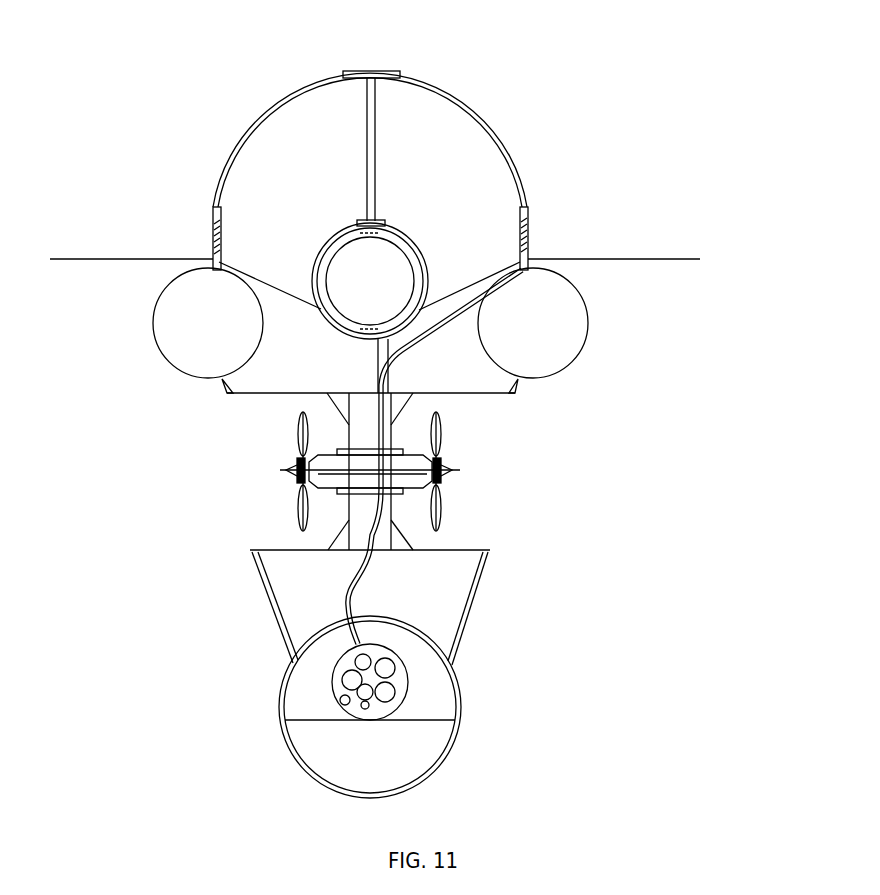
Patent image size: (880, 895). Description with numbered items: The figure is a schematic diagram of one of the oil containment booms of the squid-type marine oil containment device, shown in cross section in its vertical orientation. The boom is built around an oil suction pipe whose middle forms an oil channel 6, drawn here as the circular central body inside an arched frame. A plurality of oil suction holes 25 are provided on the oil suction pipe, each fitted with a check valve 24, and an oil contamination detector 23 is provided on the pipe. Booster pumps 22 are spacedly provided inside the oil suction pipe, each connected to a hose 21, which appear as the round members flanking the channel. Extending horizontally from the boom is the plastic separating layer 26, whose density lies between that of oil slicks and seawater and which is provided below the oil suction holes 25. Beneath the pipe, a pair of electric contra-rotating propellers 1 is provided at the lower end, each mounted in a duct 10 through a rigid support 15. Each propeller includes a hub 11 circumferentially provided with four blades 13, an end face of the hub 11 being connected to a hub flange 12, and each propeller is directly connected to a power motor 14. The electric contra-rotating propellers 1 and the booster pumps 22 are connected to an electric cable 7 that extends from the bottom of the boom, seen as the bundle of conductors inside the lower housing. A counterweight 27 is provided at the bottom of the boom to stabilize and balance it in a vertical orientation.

The electric contra-rotating propellers 1 is at (328, 607).
The oil channel 6 is at (370, 282).
The electric cable 7 is at (367, 558).
The duct 10 is at (420, 533).
The hub 11 is at (443, 475).
The hub flange 12 is at (452, 470).
The blades 13 is at (440, 430).
The power motor 14 is at (281, 472).
The rigid support 15 is at (348, 534).
The hose 21 is at (197, 317).
The booster pump 22 is at (318, 253).
The oil contamination detector 23 is at (524, 207).
The check valve 24 is at (527, 217).
The oil suction holes 25 is at (528, 258).
The plastic separating layer 26 is at (652, 259).
The counterweight 27 is at (380, 767).